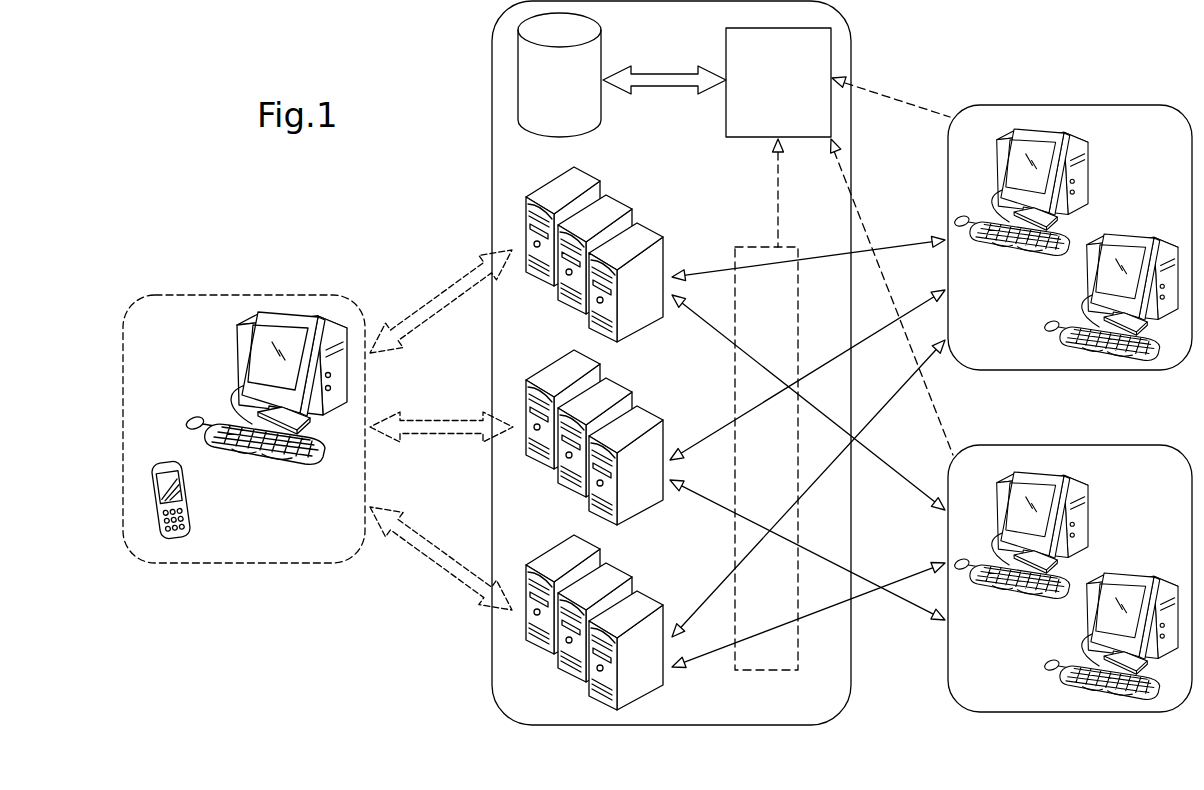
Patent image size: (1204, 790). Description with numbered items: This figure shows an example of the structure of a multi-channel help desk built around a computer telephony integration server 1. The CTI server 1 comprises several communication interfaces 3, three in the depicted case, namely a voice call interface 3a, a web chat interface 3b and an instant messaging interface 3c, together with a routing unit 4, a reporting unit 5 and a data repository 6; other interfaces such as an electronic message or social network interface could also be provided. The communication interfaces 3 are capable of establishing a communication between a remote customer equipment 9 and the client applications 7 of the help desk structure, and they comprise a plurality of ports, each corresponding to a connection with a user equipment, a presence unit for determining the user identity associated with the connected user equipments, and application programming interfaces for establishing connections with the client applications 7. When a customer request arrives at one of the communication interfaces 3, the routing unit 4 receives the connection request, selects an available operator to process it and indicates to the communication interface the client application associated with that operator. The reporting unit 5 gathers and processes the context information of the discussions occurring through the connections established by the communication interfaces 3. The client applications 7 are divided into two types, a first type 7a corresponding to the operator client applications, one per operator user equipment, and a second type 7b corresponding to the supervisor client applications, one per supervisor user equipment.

The computer telephony integration (CTI) server 1 is at (492, 100).
The communication interfaces 3 is at (585, 478).
The voice call interface 3a is at (560, 303).
The web chat interface 3b is at (560, 486).
The instant messaging interface 3c is at (586, 622).
The routing unit 4 is at (775, 469).
The reporting unit 5 is at (786, 95).
The data repository 6 is at (567, 101).
The client applications 7 is at (1046, 377).
The operator client applications 7a is at (948, 200).
The supervisor client applications 7b is at (948, 650).
The remote customer equipment 9 is at (245, 295).